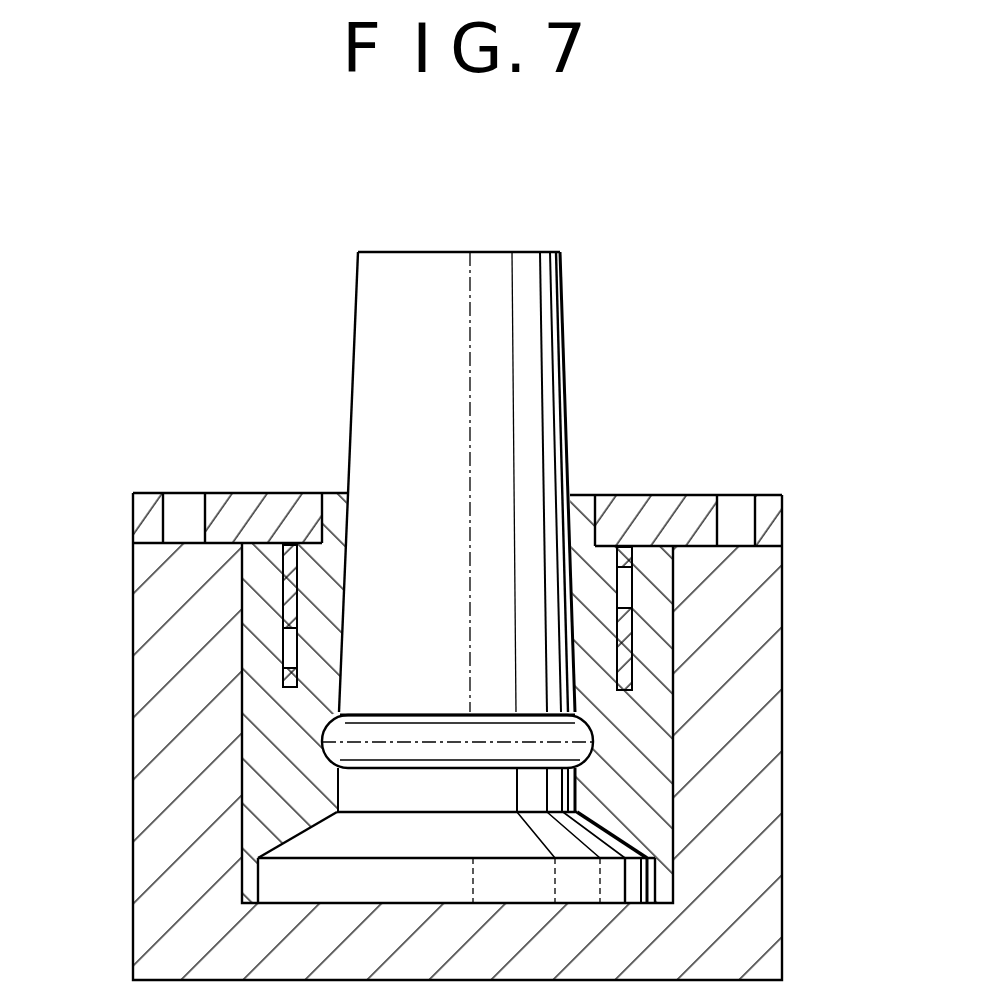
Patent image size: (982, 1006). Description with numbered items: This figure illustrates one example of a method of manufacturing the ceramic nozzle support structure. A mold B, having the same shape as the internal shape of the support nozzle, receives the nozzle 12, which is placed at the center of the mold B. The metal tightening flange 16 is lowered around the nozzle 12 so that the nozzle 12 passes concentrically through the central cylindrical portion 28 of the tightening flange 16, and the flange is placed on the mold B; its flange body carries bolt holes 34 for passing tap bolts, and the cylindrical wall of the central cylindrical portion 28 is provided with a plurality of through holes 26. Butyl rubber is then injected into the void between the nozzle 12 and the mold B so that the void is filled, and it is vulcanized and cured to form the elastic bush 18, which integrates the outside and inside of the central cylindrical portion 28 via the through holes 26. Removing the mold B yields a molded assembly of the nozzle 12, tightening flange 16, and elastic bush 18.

The nozzle 12 is at (563, 280).
The tightening flange 16 is at (655, 495).
The elastic bush 18 is at (262, 751).
The through holes 26 is at (290, 663).
The central cylindrical portion 28 is at (285, 575).
The bolt holes 34 is at (173, 515).
The mold B is at (783, 786).